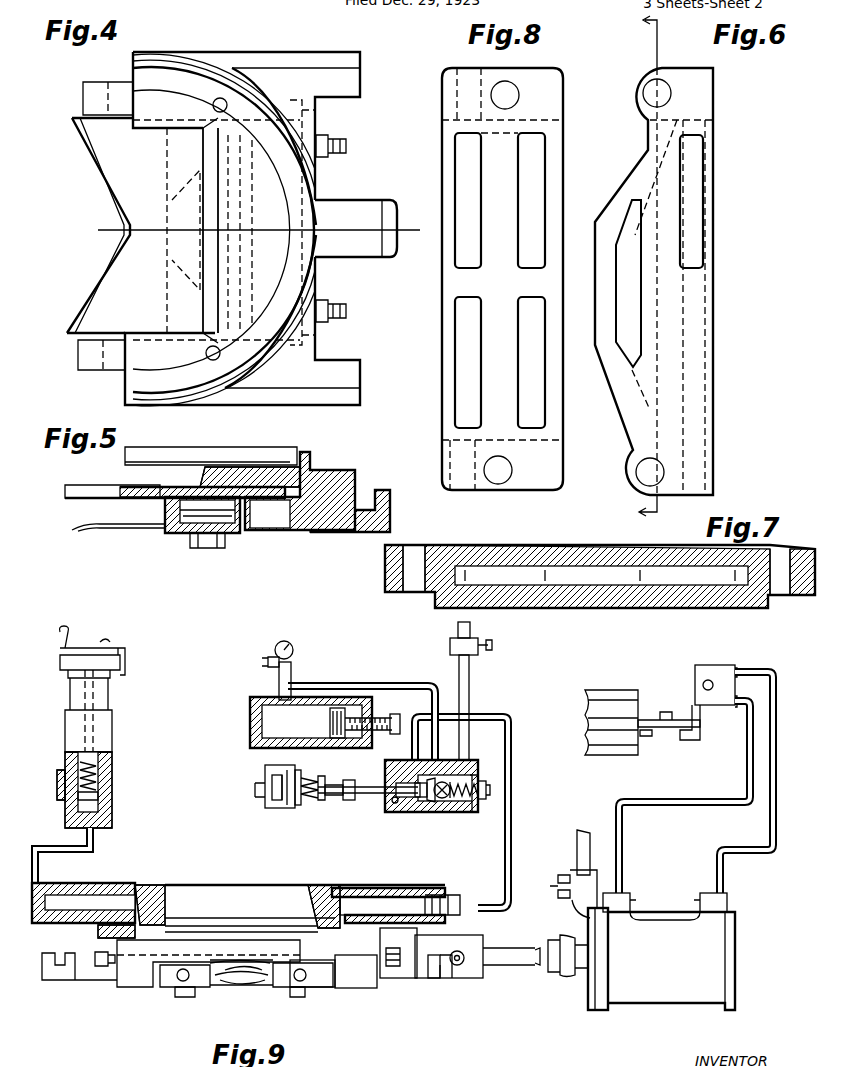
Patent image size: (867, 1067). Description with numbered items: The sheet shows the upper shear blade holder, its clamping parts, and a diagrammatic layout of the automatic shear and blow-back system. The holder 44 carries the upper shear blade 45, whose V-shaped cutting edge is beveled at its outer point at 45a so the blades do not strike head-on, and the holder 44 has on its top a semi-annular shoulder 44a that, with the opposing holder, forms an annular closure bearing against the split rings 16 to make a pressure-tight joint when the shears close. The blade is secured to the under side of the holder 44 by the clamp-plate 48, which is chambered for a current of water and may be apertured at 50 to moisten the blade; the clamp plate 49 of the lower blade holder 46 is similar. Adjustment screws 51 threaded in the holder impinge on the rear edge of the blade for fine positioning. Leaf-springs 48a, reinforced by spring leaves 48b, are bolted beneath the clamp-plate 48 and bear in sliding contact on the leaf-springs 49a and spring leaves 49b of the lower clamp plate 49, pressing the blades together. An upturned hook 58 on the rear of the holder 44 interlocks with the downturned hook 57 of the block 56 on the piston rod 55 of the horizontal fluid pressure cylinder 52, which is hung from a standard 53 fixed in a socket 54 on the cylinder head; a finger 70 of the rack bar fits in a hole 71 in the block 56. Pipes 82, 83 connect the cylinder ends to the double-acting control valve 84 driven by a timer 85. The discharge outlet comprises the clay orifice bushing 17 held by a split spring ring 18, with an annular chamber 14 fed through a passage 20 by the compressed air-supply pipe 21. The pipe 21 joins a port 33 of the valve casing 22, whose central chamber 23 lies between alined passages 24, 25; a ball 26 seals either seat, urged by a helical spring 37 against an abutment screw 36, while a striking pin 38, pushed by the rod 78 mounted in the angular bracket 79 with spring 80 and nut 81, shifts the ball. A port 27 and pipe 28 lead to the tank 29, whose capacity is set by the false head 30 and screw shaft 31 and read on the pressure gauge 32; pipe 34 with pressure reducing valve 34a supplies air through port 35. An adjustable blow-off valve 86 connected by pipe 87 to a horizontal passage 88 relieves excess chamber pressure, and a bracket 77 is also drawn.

In FIG. 9, the annular chamber 14 is at (360, 888).
In FIG. 9, the split rings 16 is at (98, 931).
In FIG. 9, the clay orifice bushing 17 is at (270, 884).
In FIG. 9, the split spring ring 18 is at (222, 918).
In FIG. 9, the passage 20 is at (392, 897).
In FIG. 9, the compressed air-supply pipe 21 is at (478, 893).
In FIG. 9, the valve casing 22 is at (444, 800).
In FIG. 9, the central chamber 23 is at (428, 803).
In FIG. 9, the passage 24 is at (413, 800).
In FIG. 9, the passage 25 is at (466, 812).
In FIG. 9, the ball 26 is at (425, 812).
In FIG. 9, the port 27 is at (402, 766).
In FIG. 9, the pipe 28 is at (410, 680).
In FIG. 9, the tank 29 is at (311, 722).
In FIG. 9, the false head 30 is at (330, 722).
In FIG. 9, the screw shaft 31 is at (382, 716).
In FIG. 9, the pressure gauge 32 is at (282, 641).
In FIG. 9, the port 33 is at (400, 778).
In FIG. 9, the pipe 34 is at (470, 692).
In FIG. 9, the pressure reducing valve 34a is at (492, 642).
In FIG. 9, the port 35 is at (496, 740).
In FIG. 9, the abutment screw 36 is at (480, 790).
In FIG. 9, the helical spring 37 is at (470, 778).
In FIG. 9, the striking pin 38 is at (375, 796).
In FIG. 4, the holder 44 is at (318, 130).
In FIG. 5, the holder 44 is at (300, 502).
In FIG. 9, the holder 44 is at (365, 988).
In FIG. 4, the semi-annular shoulder 44a is at (200, 326).
In FIG. 5, the semi-annular shoulder 44a is at (290, 452).
In FIG. 4, the upper shear blade 45 is at (100, 225).
In FIG. 5, the upper shear blade 45 is at (96, 485).
In FIG. 4, the bevel 45a is at (78, 126).
In FIG. 9, the holder 46 is at (145, 987).
In FIG. 6, the clamp-plate 48 is at (714, 292).
In FIG. 7, the clamp-plate 48 is at (586, 547).
In FIG. 5, the clamp-plate 48 is at (178, 534).
In FIG. 9, the clamp-plate 48 is at (328, 988).
In FIG. 4, the leaf-springs 48a is at (101, 86).
In FIG. 5, the leaf-springs 48a is at (145, 522).
In FIG. 9, the leaf-springs 48a is at (258, 986).
In FIG. 5, the spring leaves 48b is at (160, 530).
In FIG. 9, the spring leaves 48b is at (295, 990).
In FIG. 8, the clamp plate 49 is at (442, 436).
In FIG. 9, the clamp plate 49 is at (178, 988).
In FIG. 9, the leaf-springs 49a is at (222, 987).
In FIG. 9, the spring leaves 49b is at (212, 1000).
In FIG. 8, the apertures 50 is at (462, 306).
In FIG. 4, the adjustment screws 51 is at (347, 146).
In FIG. 5, the adjustment screws 51 is at (270, 514).
In FIG. 9, the adjustment screws 51 is at (100, 968).
In FIG. 9, the fluid pressure cylinder 52 is at (661, 951).
In FIG. 9, the standard 53 is at (577, 842).
In FIG. 9, the socket 54 is at (556, 887).
In FIG. 9, the piston rod 55 is at (540, 947).
In FIG. 9, the block 56 is at (475, 935).
In FIG. 9, the downturned hook 57 is at (434, 978).
In FIG. 4, the upturned hook 58 is at (392, 205).
In FIG. 5, the upturned hook 58 is at (386, 489).
In FIG. 9, the upturned hook 58 is at (450, 978).
In FIG. 9, the finger 70 is at (462, 963).
In FIG. 9, the hole 71 is at (465, 968).
In FIG. 9, the bracket 77 is at (55, 968).
In FIG. 9, the rod 78 is at (347, 780).
In FIG. 9, the angular bracket 79 is at (297, 806).
In FIG. 9, the spring 80 is at (312, 800).
In FIG. 9, the nut 81 is at (262, 776).
In FIG. 9, the pipe 82 is at (624, 842).
In FIG. 9, the pipe 83 is at (716, 866).
In FIG. 9, the double-acting control valve 84 is at (696, 663).
In FIG. 9, the timer 85 is at (612, 690).
In FIG. 9, the blow-off valve 86 is at (113, 742).
In FIG. 9, the pipe 87 is at (46, 872).
In FIG. 9, the horizontal passage 88 is at (90, 882).